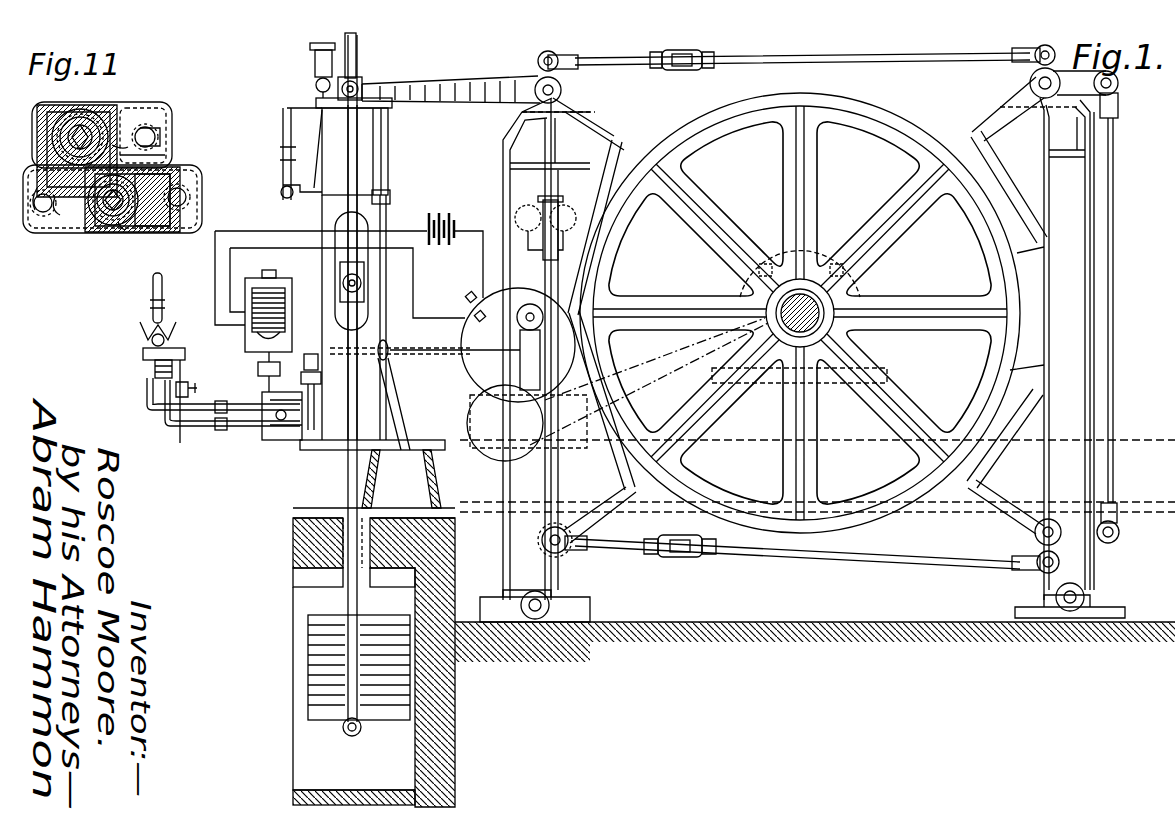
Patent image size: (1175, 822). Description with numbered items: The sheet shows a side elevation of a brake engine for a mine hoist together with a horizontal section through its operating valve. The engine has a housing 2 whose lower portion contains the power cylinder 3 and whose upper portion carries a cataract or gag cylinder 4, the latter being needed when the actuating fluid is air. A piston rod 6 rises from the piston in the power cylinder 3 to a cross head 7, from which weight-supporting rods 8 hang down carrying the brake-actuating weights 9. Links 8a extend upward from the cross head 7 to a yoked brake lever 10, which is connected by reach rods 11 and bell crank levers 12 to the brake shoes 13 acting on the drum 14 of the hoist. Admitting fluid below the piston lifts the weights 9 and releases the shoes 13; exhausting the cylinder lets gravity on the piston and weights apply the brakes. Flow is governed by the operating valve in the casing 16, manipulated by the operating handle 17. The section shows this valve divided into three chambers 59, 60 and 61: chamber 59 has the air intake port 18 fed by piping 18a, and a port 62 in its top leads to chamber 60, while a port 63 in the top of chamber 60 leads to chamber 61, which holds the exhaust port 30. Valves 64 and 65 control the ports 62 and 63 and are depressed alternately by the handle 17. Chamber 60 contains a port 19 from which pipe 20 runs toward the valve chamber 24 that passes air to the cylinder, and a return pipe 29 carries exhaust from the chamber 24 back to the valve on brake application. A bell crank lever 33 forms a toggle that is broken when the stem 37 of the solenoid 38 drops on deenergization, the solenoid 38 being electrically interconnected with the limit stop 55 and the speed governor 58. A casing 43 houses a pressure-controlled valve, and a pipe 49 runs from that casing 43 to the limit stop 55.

In FIG. 1, the housing 2 is at (378, 268).
In FIG. 1, the power cylinder 3 is at (372, 388).
In FIG. 1, the cataract or gag cylinder 4 is at (366, 158).
In FIG. 1, the piston rod 6 is at (357, 57).
In FIG. 1, the cross head 7 is at (362, 290).
In FIG. 1, the weight-supporting rods 8 is at (353, 393).
In FIG. 1, the links 8a is at (360, 130).
In FIG. 1, the brake-actuating weights 9 is at (325, 652).
In FIG. 1, the yoked brake lever 10 is at (446, 80).
In FIG. 1, the reach rods 11 is at (872, 57).
In FIG. 1, the bell crank levers 12 is at (1030, 68).
In FIG. 1, the brake shoes 13 is at (625, 158).
In FIG. 1, the drum 14 is at (732, 107).
In FIG. 11, the valve casing 16 is at (157, 152).
In FIG. 1, the valve casing 16 is at (168, 340).
In FIG. 1, the operating handle 17 is at (153, 283).
In FIG. 11, the air intake port 18 is at (150, 135).
In FIG. 1, the piping 18a is at (186, 367).
In FIG. 11, the port 19 is at (57, 225).
In FIG. 11, the pipe 20 is at (62, 215).
In FIG. 1, the pipe 20 is at (147, 371).
In FIG. 1, the valve chamber 24 is at (264, 400).
In FIG. 11, the pipe 29 is at (123, 224).
In FIG. 1, the pipe 29 is at (165, 393).
In FIG. 11, the exhaust port 30 is at (187, 198).
In FIG. 1, the bell crank lever 33 is at (267, 383).
In FIG. 1, the stem 37 is at (258, 366).
In FIG. 1, the solenoid 38 is at (276, 300).
In FIG. 1, the casing 43 is at (319, 369).
In FIG. 1, the pipe 49 is at (425, 343).
In FIG. 1, the limit stop 55 is at (470, 398).
In FIG. 1, the speed governor 58 is at (555, 212).
In FIG. 11, the chamber 59 is at (168, 112).
In FIG. 11, the chamber 60 is at (40, 212).
In FIG. 11, the chamber 61 is at (168, 224).
In FIG. 11, the port 62 is at (136, 130).
In FIG. 11, the port 63 is at (126, 148).
In FIG. 11, the valve 64 is at (82, 128).
In FIG. 11, the valve 65 is at (112, 226).